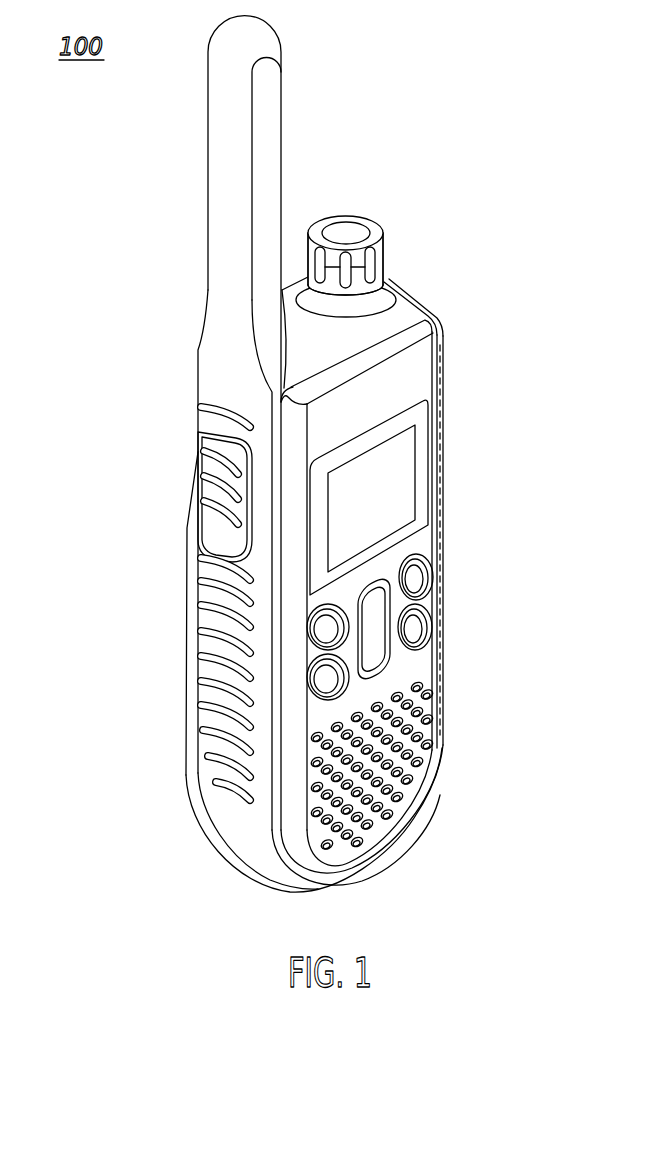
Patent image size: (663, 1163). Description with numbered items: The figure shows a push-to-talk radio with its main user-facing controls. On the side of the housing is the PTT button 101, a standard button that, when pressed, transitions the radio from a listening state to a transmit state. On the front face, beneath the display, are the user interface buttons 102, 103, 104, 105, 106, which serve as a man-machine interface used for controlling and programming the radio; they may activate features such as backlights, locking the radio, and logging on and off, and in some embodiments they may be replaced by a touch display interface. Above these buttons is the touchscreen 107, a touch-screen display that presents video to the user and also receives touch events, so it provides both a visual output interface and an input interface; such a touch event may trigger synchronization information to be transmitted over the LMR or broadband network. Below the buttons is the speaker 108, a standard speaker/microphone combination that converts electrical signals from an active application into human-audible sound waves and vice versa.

The PTT button 101 is at (212, 497).
The user interface button 102 is at (327, 625).
The user interface button 103 is at (327, 676).
The user interface button 104 is at (415, 625).
The user interface button 105 is at (378, 648).
The user interface button 106 is at (417, 577).
The touchscreen 107 is at (396, 492).
The speaker 108 is at (436, 725).